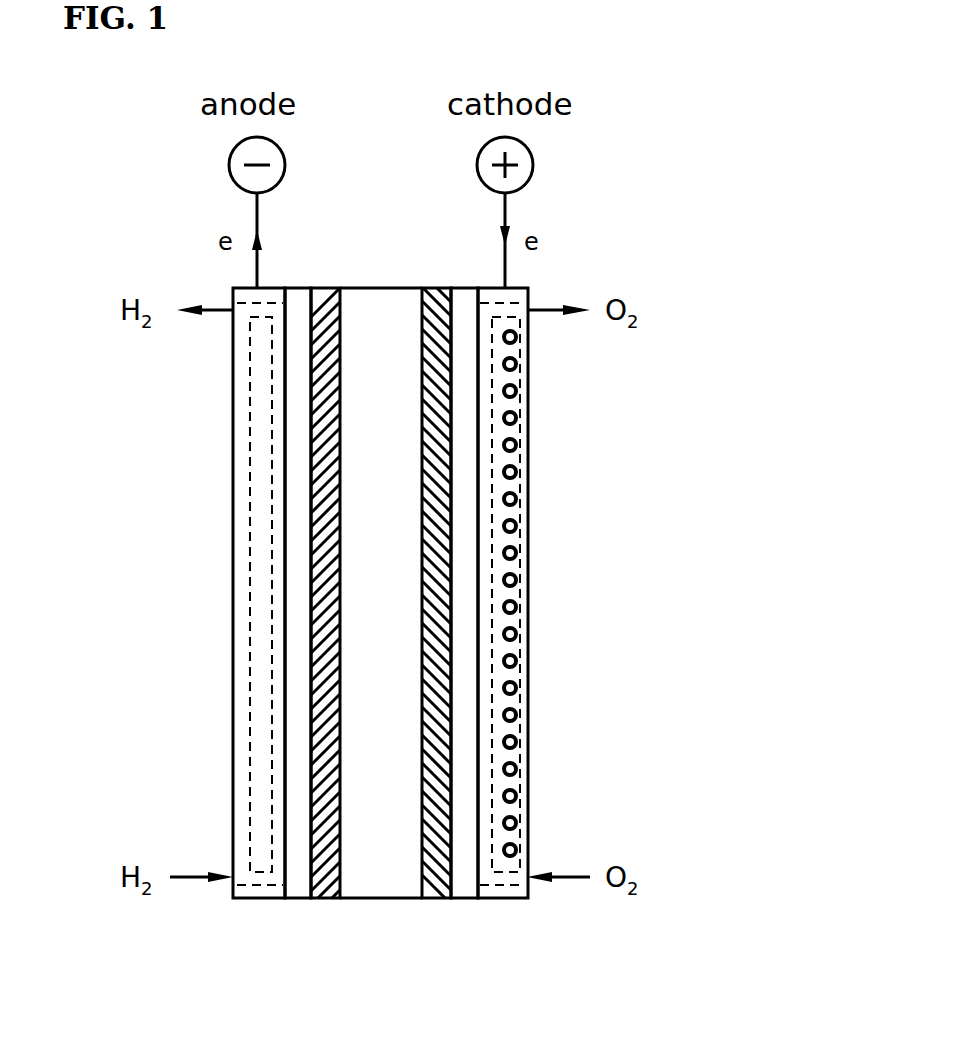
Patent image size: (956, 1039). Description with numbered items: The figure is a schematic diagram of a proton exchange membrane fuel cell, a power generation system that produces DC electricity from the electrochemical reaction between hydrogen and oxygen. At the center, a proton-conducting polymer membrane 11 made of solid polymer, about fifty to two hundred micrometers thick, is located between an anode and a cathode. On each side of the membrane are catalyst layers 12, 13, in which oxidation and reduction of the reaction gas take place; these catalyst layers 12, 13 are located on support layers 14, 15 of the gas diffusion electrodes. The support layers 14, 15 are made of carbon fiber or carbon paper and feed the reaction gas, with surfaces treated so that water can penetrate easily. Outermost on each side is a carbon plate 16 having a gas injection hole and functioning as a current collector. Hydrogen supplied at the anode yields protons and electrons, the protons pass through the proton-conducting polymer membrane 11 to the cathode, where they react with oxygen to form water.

The proton-conducting polymer membrane 11 is at (380, 878).
The catalyst layer 12 is at (327, 898).
The catalyst layer 13 is at (437, 898).
The support layer 14 is at (300, 484).
The support layer 15 is at (462, 485).
The carbon plate 16 is at (250, 596).